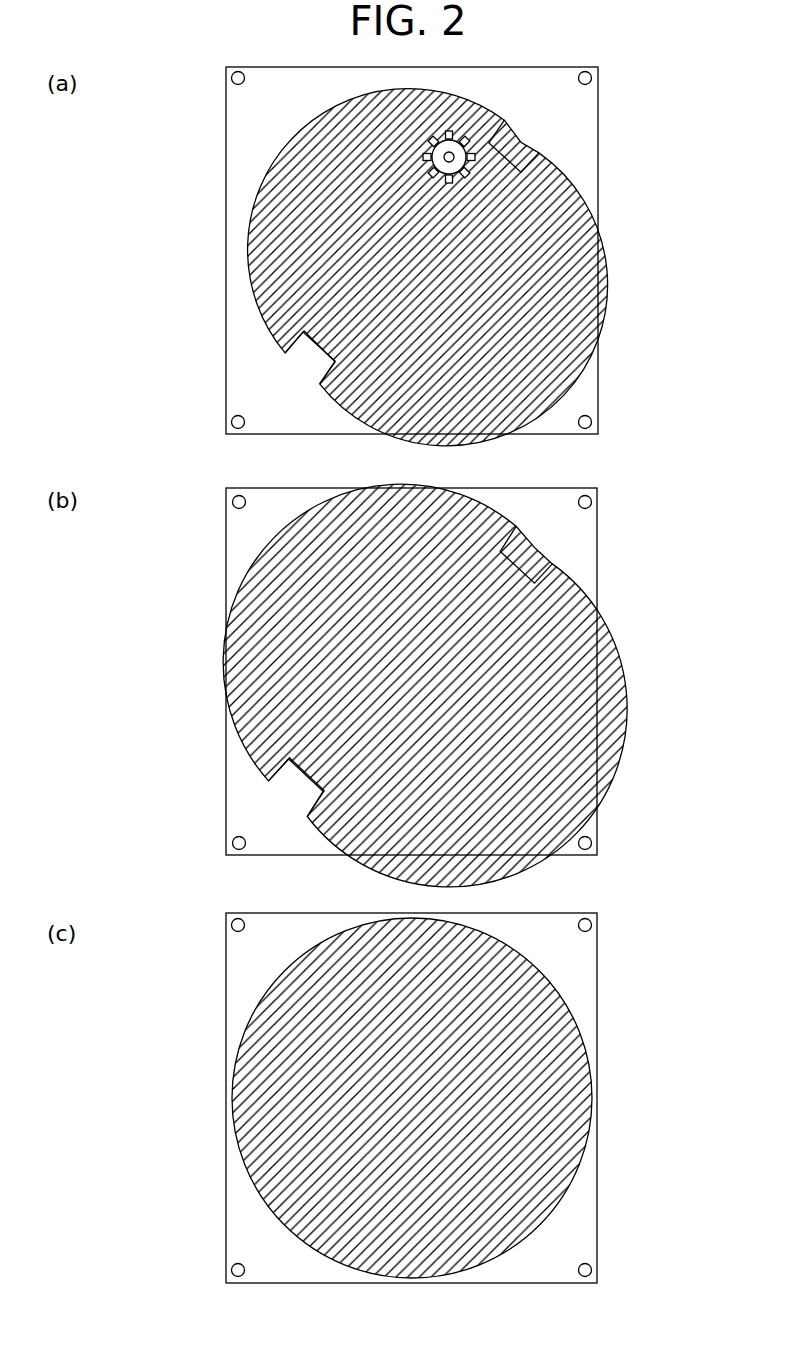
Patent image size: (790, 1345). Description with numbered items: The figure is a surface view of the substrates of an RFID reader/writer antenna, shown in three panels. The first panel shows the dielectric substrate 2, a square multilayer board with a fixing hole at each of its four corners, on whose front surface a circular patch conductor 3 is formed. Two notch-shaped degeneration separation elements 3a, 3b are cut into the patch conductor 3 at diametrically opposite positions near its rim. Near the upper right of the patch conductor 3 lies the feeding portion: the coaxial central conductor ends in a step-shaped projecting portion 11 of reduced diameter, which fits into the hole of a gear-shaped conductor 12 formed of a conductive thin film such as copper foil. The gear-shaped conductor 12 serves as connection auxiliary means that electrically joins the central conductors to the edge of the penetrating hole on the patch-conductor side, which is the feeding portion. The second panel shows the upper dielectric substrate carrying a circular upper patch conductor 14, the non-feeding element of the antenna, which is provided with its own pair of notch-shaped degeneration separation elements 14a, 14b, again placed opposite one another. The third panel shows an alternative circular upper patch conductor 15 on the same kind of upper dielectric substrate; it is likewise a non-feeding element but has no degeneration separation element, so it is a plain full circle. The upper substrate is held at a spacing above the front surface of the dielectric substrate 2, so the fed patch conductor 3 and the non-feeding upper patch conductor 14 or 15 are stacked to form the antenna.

The dielectric substrate 2 is at (598, 191).
The circular patch conductor 3 is at (302, 245).
The notch-shaped degeneration separation element 3a is at (507, 155).
The notch-shaped degeneration separation element 3b is at (325, 352).
The step-shaped projecting portion 11 is at (452, 160).
The gear-shaped conductor 12 is at (453, 173).
The circular upper patch conductor 14 is at (300, 650).
The notch-shaped degeneration separation element 14a is at (526, 562).
The notch-shaped degeneration separation element 14b is at (321, 788).
The circular upper patch conductor 15 is at (292, 1093).